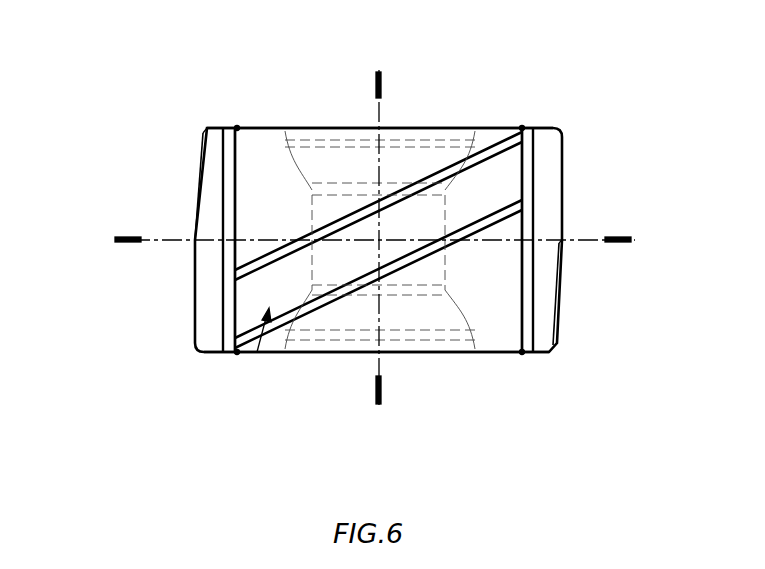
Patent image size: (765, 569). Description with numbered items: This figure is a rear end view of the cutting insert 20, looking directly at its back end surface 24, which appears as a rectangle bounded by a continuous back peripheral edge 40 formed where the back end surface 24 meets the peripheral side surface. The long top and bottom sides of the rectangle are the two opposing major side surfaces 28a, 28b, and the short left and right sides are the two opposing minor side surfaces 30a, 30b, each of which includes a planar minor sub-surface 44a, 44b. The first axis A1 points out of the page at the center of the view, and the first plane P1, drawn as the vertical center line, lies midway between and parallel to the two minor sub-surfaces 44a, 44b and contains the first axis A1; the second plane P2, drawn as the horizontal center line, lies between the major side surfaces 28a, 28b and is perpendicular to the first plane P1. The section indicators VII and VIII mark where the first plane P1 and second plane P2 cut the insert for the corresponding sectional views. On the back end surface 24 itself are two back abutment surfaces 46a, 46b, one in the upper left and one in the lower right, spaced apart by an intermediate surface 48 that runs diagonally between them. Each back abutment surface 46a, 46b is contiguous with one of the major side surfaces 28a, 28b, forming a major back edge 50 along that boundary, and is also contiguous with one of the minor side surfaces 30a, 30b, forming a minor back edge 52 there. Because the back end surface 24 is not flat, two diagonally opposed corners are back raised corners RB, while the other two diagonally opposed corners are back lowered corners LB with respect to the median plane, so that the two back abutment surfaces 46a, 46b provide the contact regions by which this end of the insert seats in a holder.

The cutting insert 20 is at (516, 100).
The back end surface 24 is at (257, 352).
The major side surface 28a is at (435, 120).
The major side surface 28b is at (418, 360).
The minor side surface 30a is at (558, 190).
The minor side surface 30b is at (198, 318).
The back peripheral edge 40 is at (463, 360).
The planar minor sub-surface 44a is at (526, 136).
The planar minor sub-surface 44b is at (236, 260).
The back abutment surface 46a is at (300, 209).
The back abutment surface 46b is at (512, 309).
The intermediate surface 48 is at (490, 204).
The major back edge 50 is at (262, 128).
The minor back edge 52 is at (232, 178).
The first axis A1 is at (380, 240).
The first plane P1 is at (380, 238).
The second plane P2 is at (374, 241).
The back lowered corner LB is at (563, 378).
The back raised corner RB is at (522, 128).
The section line VII is at (368, 85).
The section line VIII is at (128, 228).